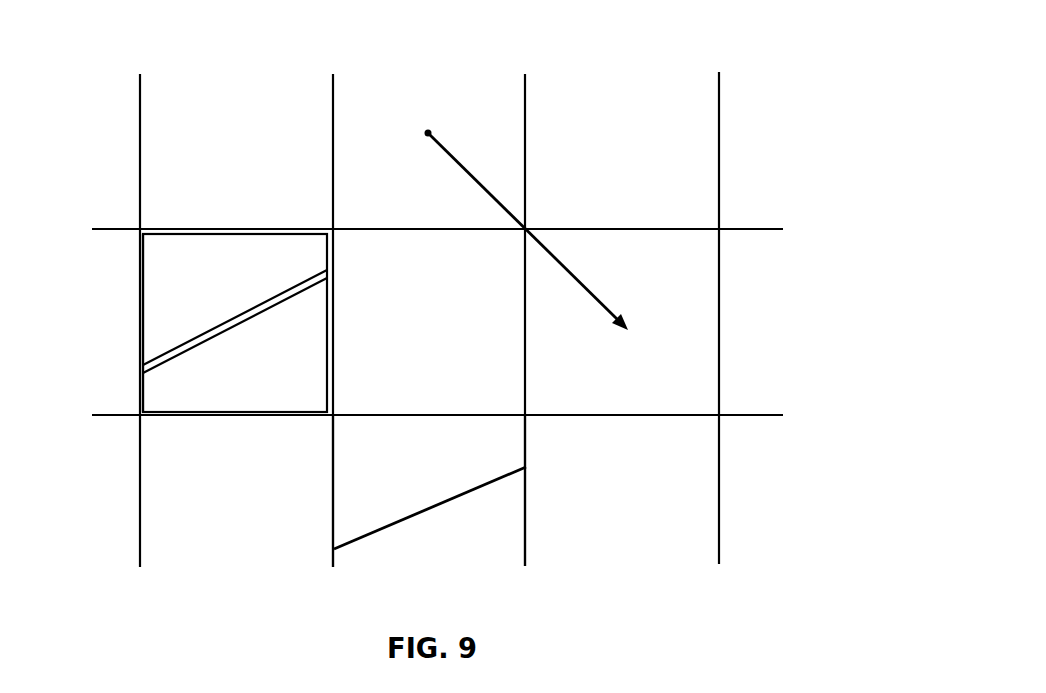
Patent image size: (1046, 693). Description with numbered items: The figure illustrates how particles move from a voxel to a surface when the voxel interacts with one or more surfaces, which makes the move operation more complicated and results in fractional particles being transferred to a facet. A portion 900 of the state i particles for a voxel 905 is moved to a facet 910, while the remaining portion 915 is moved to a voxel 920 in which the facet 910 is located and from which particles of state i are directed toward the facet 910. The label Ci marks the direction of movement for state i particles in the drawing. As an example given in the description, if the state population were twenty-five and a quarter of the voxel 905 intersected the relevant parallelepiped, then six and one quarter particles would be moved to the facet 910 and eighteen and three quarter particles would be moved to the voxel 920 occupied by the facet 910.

The portion of state i particles 900 is at (155, 393).
The voxel 905 is at (213, 330).
The facet 910 is at (390, 526).
The remaining portion 915 is at (155, 285).
The voxel 920 is at (348, 477).
The direction vector Ci is at (575, 275).